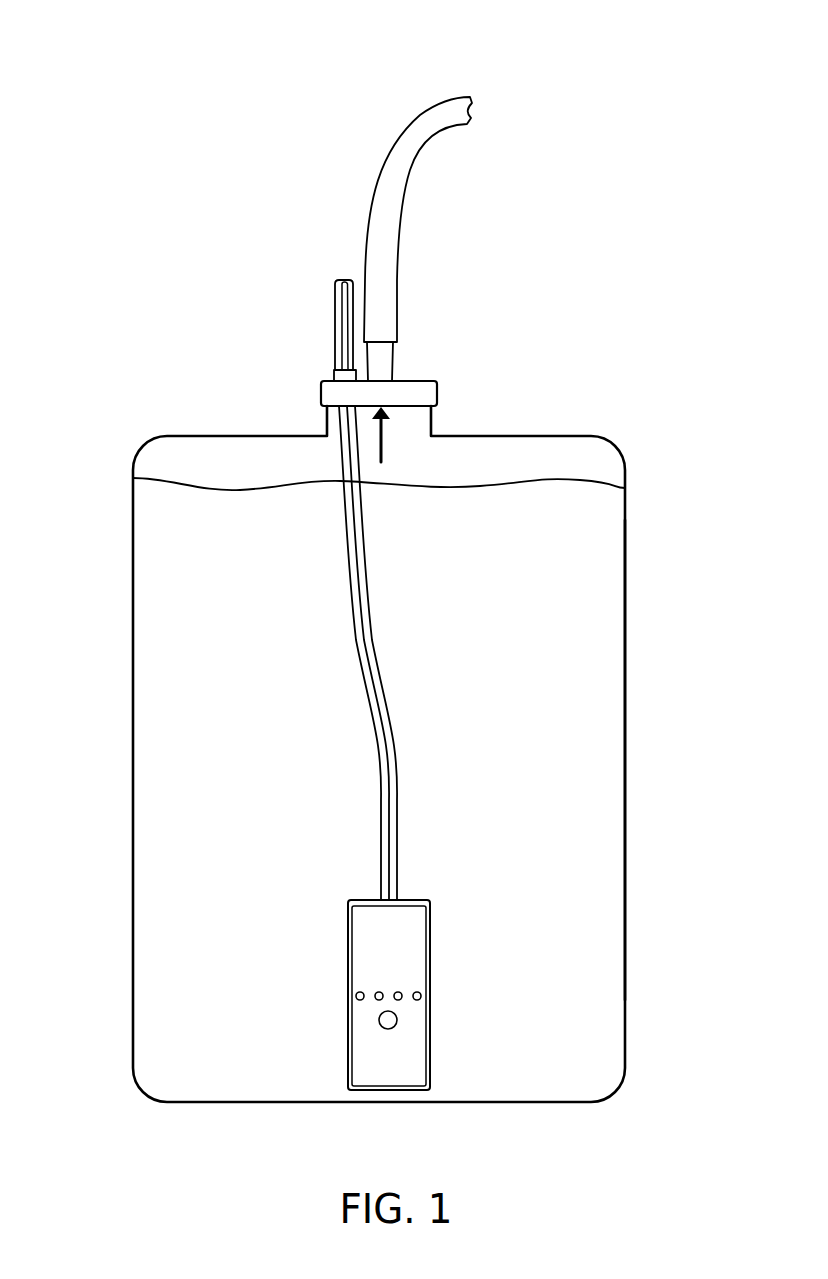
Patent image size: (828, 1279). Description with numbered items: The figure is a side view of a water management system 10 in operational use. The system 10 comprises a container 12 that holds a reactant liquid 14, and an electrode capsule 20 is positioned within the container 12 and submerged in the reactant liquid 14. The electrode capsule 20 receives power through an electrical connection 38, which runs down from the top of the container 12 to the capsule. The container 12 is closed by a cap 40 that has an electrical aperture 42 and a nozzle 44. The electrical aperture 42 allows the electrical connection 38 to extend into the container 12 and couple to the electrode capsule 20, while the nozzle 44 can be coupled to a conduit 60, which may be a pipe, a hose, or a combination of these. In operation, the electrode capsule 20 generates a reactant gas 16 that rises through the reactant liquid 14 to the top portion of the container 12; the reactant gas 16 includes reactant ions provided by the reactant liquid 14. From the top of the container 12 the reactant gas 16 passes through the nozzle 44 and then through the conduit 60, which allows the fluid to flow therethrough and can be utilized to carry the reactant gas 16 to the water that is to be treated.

The water management system 10 is at (165, 80).
The container 12 is at (613, 443).
The reactant liquid 14 is at (603, 658).
The reactant gas 16 is at (278, 457).
The electrode capsule 20 is at (300, 935).
The electrical connection 38 is at (355, 623).
The cap 40 is at (425, 393).
The electrical aperture 42 is at (335, 375).
The nozzle 44 is at (380, 368).
The conduit 60 is at (408, 158).